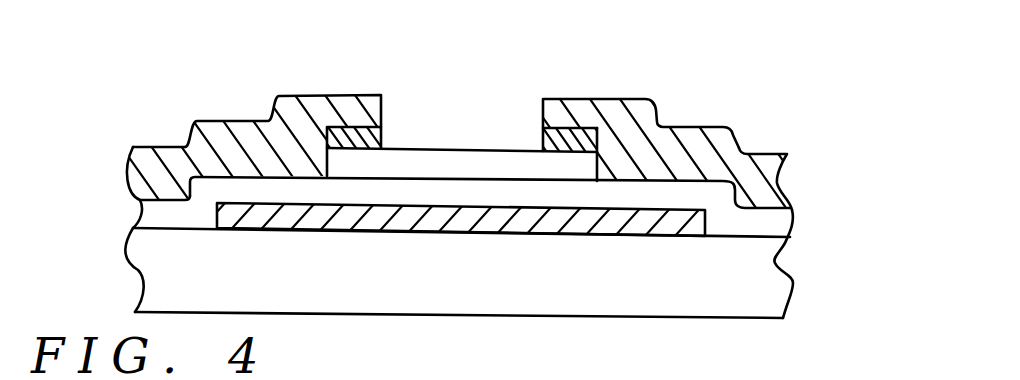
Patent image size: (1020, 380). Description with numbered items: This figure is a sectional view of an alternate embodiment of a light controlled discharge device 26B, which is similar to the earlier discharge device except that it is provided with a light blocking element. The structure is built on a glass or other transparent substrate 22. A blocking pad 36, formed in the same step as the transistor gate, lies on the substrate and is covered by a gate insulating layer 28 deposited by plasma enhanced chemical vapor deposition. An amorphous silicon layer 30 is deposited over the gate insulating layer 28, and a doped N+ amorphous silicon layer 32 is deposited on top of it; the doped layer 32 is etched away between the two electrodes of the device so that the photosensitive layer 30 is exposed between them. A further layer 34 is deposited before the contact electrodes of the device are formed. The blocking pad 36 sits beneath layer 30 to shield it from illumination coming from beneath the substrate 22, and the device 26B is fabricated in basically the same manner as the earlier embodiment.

The transparent substrate 22 is at (775, 290).
The light controlled device 26B is at (713, 127).
The gate insulating layer 28 is at (775, 222).
The amorphous silicon layer 30 is at (282, 101).
The doped amorphous silicon layer 32 is at (547, 140).
The layer 34 is at (148, 168).
The blocking pad 36 is at (258, 212).